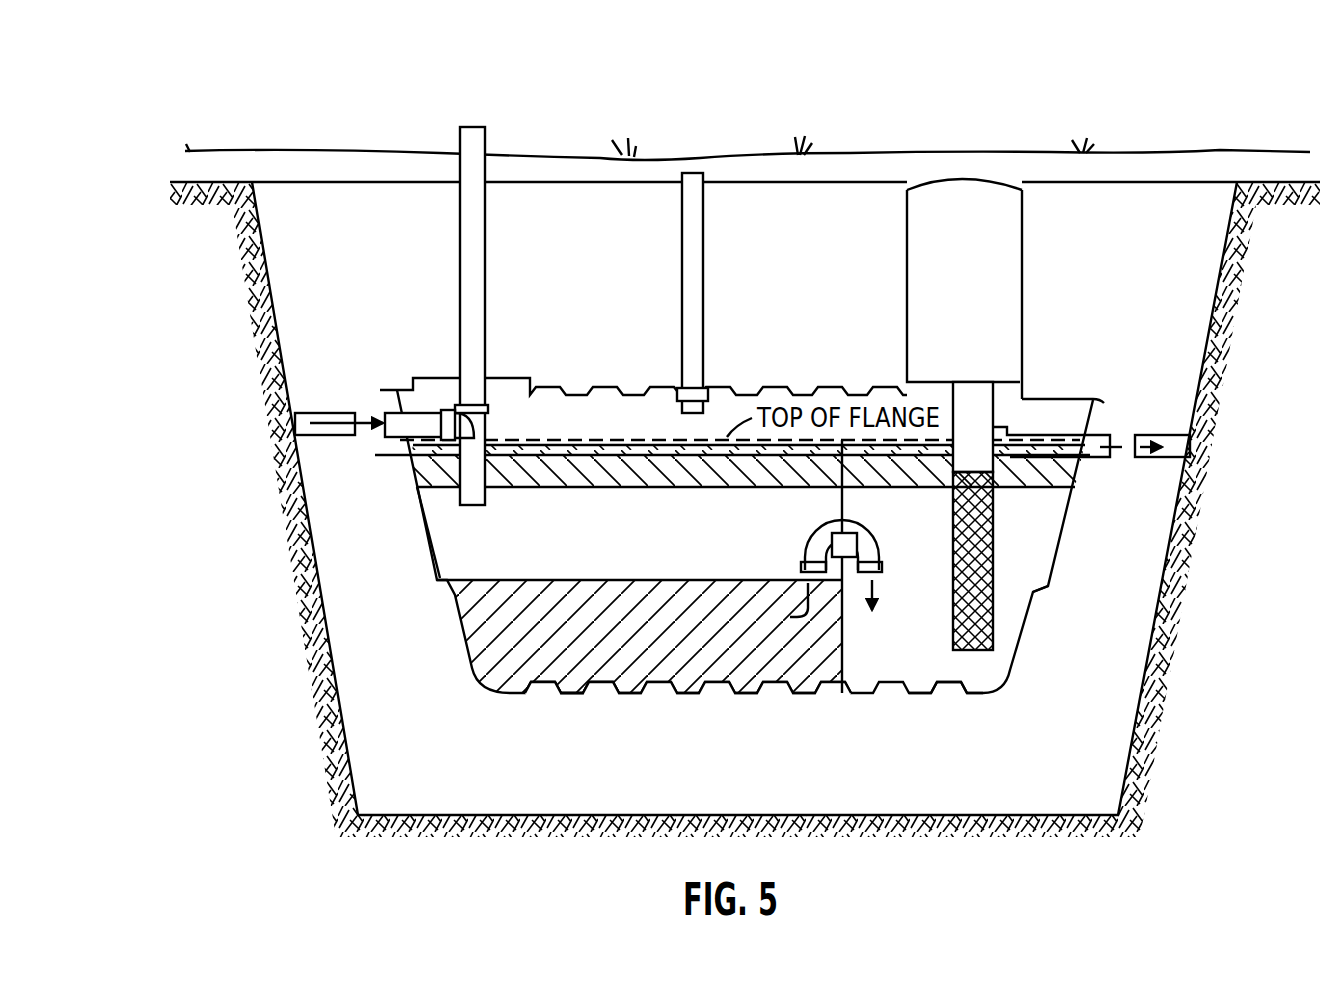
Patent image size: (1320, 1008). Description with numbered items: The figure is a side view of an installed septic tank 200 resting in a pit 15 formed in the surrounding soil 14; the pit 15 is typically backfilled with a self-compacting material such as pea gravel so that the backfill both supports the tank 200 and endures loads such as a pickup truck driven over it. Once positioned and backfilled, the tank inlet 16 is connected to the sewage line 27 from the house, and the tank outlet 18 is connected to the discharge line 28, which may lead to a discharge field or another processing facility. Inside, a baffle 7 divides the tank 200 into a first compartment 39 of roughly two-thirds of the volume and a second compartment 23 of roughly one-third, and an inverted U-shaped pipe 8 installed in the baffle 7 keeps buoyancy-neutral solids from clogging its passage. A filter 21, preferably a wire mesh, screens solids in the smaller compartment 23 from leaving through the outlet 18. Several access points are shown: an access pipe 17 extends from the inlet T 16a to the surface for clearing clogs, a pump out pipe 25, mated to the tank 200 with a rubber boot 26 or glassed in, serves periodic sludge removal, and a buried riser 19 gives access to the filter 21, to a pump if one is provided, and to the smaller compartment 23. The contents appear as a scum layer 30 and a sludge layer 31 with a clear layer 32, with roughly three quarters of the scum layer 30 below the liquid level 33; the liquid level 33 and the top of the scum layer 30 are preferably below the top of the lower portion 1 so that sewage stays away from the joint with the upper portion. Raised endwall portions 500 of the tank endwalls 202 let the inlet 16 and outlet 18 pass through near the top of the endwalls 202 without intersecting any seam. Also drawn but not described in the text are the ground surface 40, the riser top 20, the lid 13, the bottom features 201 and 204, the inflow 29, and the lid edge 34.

The lower portion 1 is at (985, 685).
The baffle 7 is at (848, 532).
The pipe 8 is at (805, 548).
The lid 13 is at (423, 365).
The surrounding soil 14 is at (405, 812).
The pit 15 is at (763, 778).
The tank inlet 16 is at (385, 412).
The inlet T 16a is at (480, 424).
The access pipe 17 is at (490, 128).
The tank outlet 18 is at (1098, 462).
The riser 19 is at (1025, 292).
The riser 20 is at (990, 172).
The filter 21 is at (997, 565).
The second compartment 23 is at (934, 615).
The pump out pipe 25 is at (706, 290).
The rubber boot 26 is at (712, 392).
The sewage line 27 is at (340, 410).
The discharge line 28 is at (1180, 462).
The inflow 29 is at (362, 440).
The scum layer 30 is at (720, 482).
The sludge layer 31 is at (651, 645).
The clear layer 32 is at (564, 553).
The liquid level 33 is at (585, 452).
The lid edge 34 is at (1125, 438).
The first compartment 39 is at (660, 553).
The ground surface 40 is at (857, 148).
The tank 200 is at (1103, 330).
The tank bottom corrugation 201 is at (635, 697).
The tank endwalls 202 is at (427, 538).
The tank bottom 204 is at (918, 695).
The raised endwall portions 500 is at (405, 400).